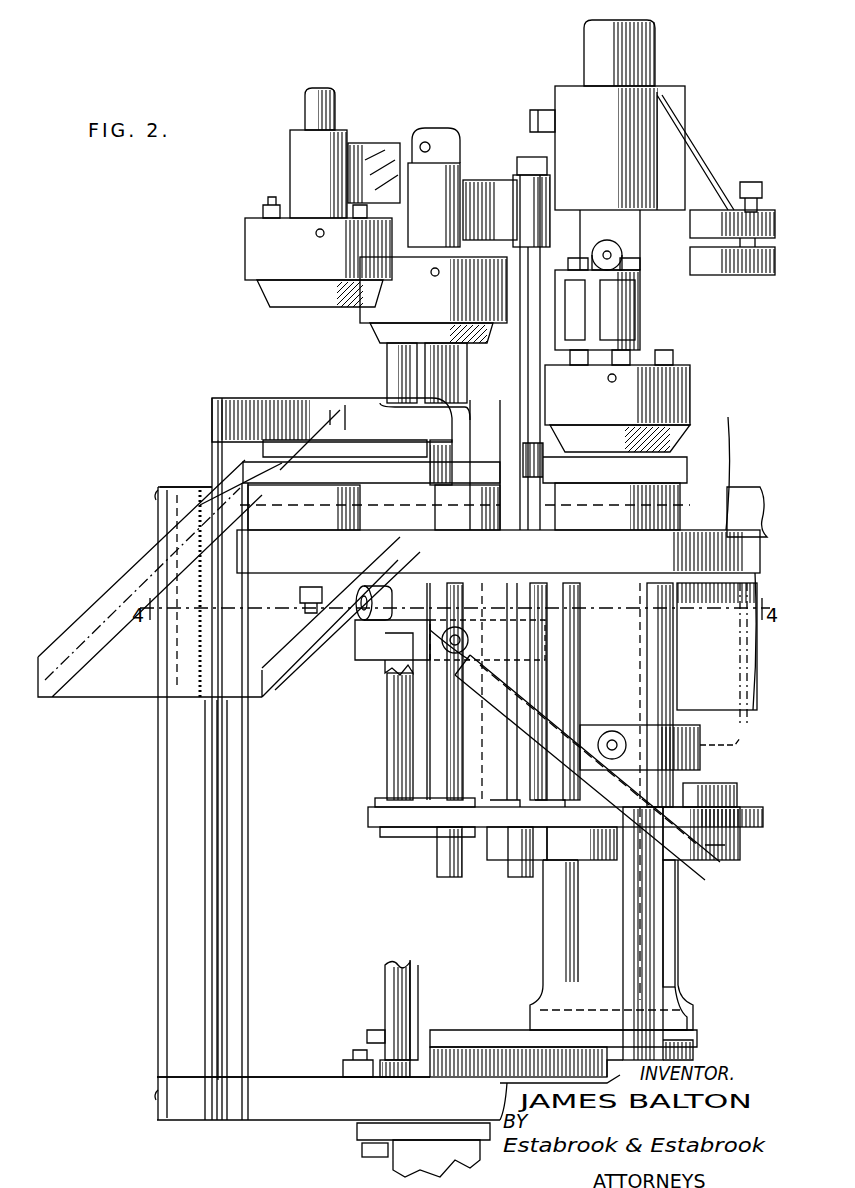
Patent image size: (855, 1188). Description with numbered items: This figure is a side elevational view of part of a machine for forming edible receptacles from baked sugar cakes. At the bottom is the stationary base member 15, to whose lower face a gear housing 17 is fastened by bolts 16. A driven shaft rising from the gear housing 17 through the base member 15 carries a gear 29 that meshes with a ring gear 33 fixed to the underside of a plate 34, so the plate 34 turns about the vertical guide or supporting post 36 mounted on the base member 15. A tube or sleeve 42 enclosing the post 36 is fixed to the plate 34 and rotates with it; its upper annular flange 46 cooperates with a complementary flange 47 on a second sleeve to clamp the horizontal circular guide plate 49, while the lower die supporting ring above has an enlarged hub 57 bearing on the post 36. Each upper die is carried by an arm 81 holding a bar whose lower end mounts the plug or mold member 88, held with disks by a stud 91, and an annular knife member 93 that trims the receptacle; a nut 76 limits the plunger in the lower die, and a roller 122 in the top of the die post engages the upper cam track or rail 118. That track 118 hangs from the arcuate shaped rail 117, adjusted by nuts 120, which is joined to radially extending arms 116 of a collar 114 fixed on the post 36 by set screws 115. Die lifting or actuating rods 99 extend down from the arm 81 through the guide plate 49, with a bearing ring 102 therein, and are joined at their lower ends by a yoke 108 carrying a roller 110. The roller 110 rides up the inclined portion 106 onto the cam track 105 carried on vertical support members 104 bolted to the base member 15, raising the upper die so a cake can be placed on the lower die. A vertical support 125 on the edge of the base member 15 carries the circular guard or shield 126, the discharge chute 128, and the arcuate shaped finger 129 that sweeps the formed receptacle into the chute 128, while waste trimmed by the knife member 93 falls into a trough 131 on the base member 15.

The base member 15 is at (262, 1110).
The bolts 16 is at (362, 1150).
The gear housing 17 is at (360, 1133).
The gear 29 is at (427, 1077).
The ring gear 33 is at (500, 1077).
The plate 34 is at (502, 1032).
The guide or supporting post 36 is at (655, 52).
The tube or sleeve 42 is at (667, 905).
The annular flange 46 is at (700, 862).
The complementary flange 47 is at (712, 790).
The circular guide plate 49 is at (368, 818).
The enlarged hub 57 is at (730, 428).
The nut 76 is at (305, 612).
The arm 81 is at (372, 128).
The plug or mold member 88 is at (300, 307).
The stud 91 is at (270, 197).
The knife member 93 is at (245, 250).
The die lifting or actuating rods 99 is at (430, 362).
The bearing ring 102 is at (375, 800).
The support members 104 is at (678, 992).
The cam track 105 is at (368, 660).
The inclined portion 106 is at (512, 735).
The yoke 108 is at (470, 642).
The roller 110 is at (372, 622).
The collar 114 is at (560, 92).
The set screws 115 is at (530, 122).
The radially extending arms 116 is at (690, 160).
The arcuate shaped rail 117 is at (700, 230).
The cam track or rail 118 is at (768, 276).
The nuts 120 is at (752, 180).
The roller 122 is at (325, 92).
The support 125 is at (218, 1010).
The circular guard or shield 126 is at (190, 487).
The discharge chute 128 is at (100, 710).
The arcuate shaped finger 129 is at (282, 402).
The trough 131 is at (735, 730).